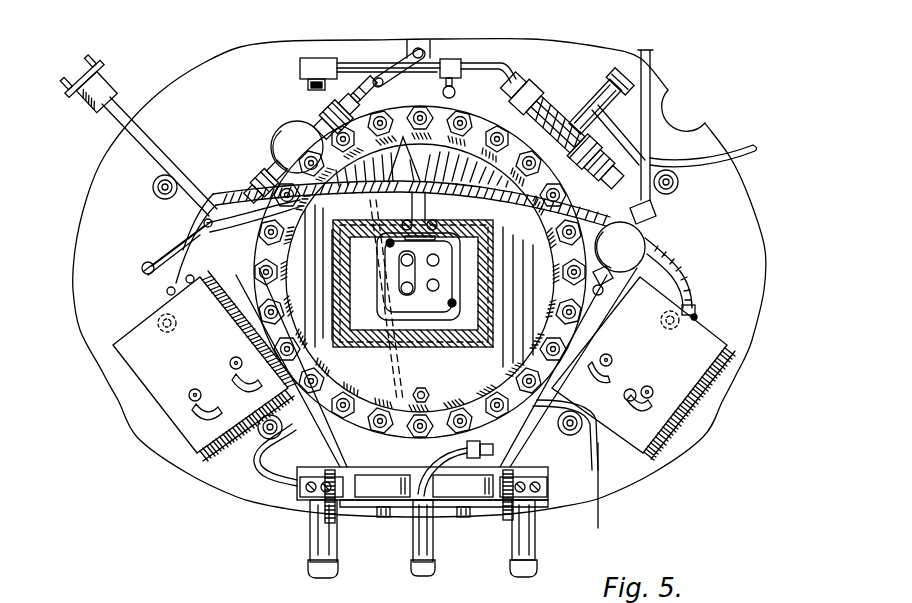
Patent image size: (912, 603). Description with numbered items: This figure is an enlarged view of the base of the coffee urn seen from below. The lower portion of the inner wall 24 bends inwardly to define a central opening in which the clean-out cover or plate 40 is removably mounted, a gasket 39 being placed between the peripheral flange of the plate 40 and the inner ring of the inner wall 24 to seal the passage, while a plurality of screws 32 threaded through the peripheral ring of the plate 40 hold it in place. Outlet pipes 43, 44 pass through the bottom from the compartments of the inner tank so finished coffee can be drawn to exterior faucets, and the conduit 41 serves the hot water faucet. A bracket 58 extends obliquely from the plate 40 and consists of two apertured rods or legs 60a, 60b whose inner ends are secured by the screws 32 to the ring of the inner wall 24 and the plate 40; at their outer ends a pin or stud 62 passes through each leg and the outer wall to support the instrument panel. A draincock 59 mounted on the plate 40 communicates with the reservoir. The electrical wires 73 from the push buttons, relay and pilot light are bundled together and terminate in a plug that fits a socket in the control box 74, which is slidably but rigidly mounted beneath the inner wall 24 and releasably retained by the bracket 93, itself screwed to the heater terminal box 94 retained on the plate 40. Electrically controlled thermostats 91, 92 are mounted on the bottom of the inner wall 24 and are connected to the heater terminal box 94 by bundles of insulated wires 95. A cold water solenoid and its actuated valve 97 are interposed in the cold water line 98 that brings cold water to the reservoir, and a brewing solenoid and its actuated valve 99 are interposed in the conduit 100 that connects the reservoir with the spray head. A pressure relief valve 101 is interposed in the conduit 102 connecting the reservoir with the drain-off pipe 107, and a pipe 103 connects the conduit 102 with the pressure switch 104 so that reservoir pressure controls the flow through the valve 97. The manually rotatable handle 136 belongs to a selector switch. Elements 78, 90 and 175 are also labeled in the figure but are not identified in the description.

The inner wall 24 is at (237, 87).
The screws 32 is at (405, 137).
The gasket 39 is at (584, 337).
The clean-out cover or plate 40 is at (463, 140).
The conduit 41 is at (427, 543).
The outlet pipe 43 is at (323, 543).
The outlet pipe 44 is at (520, 547).
The bracket 58 is at (296, 474).
The draincock 59 is at (386, 457).
The rod or leg 60a is at (257, 487).
The rod or leg 60b is at (612, 493).
The pin or stud 62 is at (501, 537).
The electrical wires 73 is at (387, 165).
The control box 74 is at (361, 331).
The wire 78 is at (527, 457).
The component 90 is at (255, 602).
The thermostat 91 is at (687, 358).
The thermostat 92 is at (145, 367).
The bracket 93 is at (457, 382).
The heater terminal box 94 is at (453, 283).
The bundles of insulated wires 95 is at (487, 160).
The cold water solenoid and actuated valve 97 is at (630, 243).
The cold water line 98 is at (643, 80).
The brewing solenoid and actuated valve 99 is at (283, 143).
The pipe line or conduit 100 is at (441, 20).
The pressure relief valve 101 is at (525, 72).
The conduit or pipe 102 is at (479, 69).
The pipe or conduit 103 is at (360, 62).
The pressure switch 104 is at (310, 58).
The drain-off pipe 107 is at (732, 147).
The manually rotatable handle 136 is at (383, 517).
The component 175 is at (217, 602).